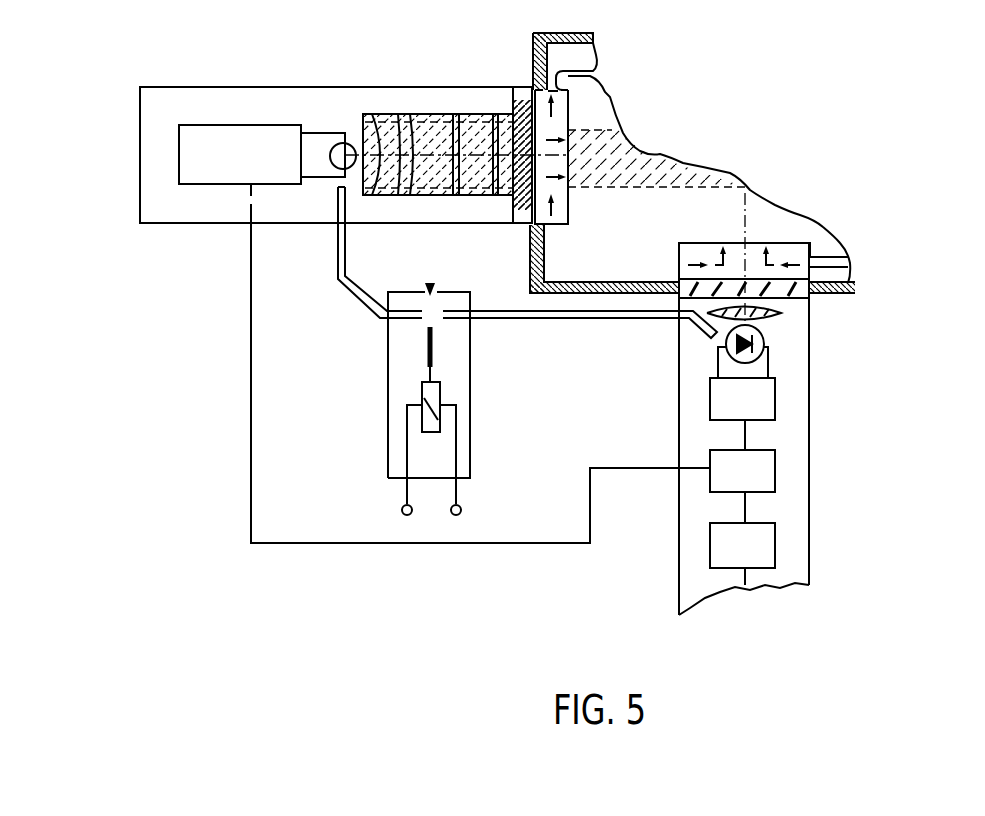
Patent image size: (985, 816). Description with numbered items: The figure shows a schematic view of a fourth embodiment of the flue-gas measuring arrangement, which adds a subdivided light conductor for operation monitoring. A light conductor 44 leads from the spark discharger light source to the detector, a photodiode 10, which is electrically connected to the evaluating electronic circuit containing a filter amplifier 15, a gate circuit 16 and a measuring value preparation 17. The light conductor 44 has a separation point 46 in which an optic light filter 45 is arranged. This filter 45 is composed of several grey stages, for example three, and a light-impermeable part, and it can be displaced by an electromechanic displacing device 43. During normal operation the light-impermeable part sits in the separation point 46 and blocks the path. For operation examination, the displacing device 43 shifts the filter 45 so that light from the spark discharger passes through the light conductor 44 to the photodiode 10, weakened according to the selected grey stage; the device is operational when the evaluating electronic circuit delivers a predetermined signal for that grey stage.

The photodiode 10 is at (748, 333).
The filter amplifier 15 is at (745, 399).
The gate circuit 16 is at (745, 467).
The measuring value preparation 17 is at (740, 550).
The electromechanic displacing device 43 is at (410, 395).
The light conductor 44 is at (340, 242).
The optic light filter 45 is at (427, 347).
The separation point 46 is at (430, 290).